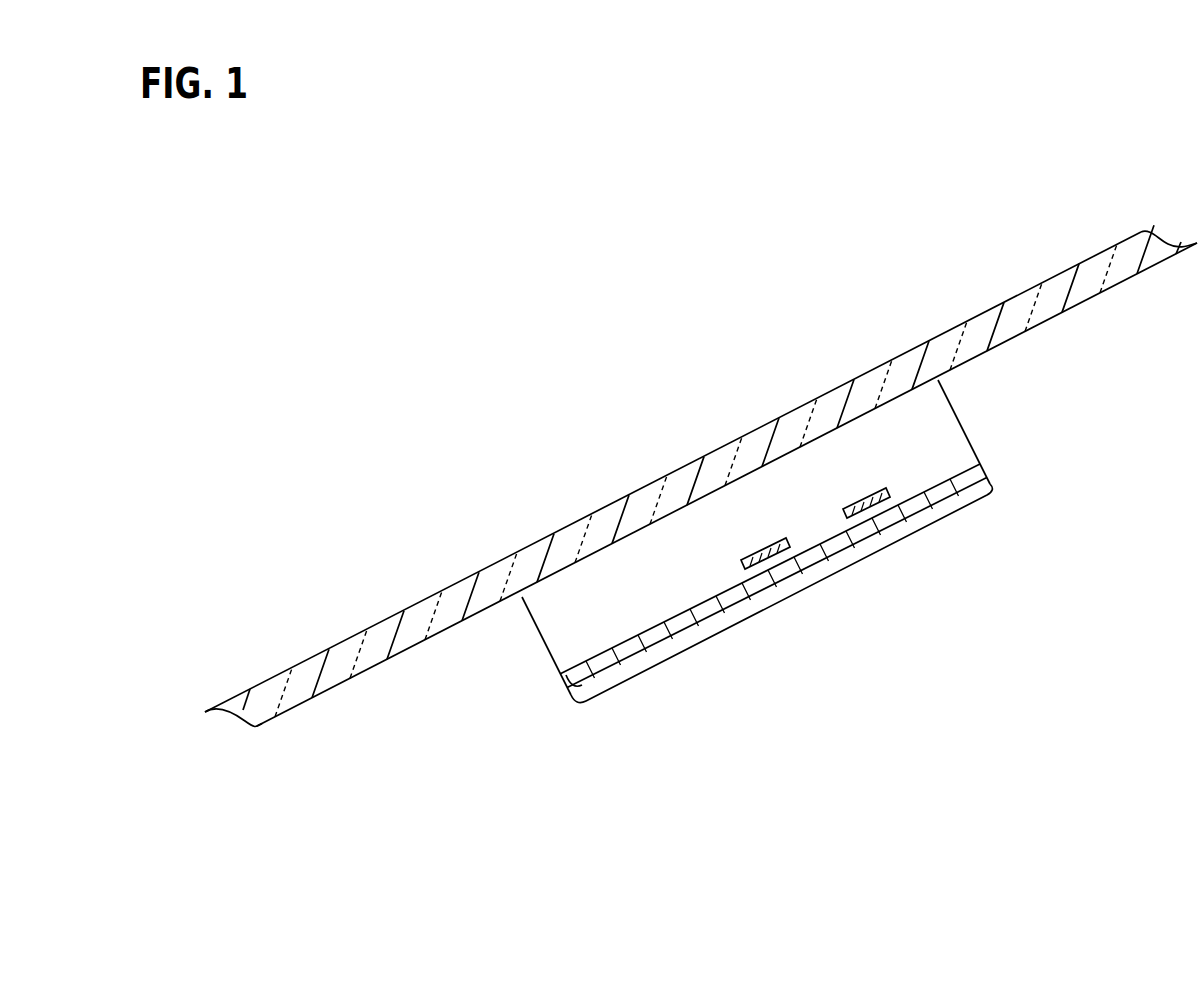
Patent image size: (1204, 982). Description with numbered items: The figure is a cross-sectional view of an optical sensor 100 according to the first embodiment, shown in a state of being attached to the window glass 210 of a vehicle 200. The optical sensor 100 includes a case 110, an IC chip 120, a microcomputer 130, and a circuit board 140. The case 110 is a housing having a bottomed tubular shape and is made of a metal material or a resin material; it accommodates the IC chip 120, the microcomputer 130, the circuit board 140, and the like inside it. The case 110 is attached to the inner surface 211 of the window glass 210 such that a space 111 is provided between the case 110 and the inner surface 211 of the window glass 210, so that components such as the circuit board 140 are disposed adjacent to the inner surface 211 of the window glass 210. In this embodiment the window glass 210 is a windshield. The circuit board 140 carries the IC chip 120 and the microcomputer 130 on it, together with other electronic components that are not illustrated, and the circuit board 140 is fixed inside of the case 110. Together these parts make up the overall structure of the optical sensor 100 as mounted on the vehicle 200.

The optical sensor 100 is at (804, 539).
The case 110 is at (930, 527).
The space 111 is at (780, 496).
The IC chip 120 is at (777, 565).
The microcomputer 130 is at (873, 508).
The circuit board 140 is at (985, 464).
The vehicle 200 is at (701, 460).
The window glass 210 is at (978, 336).
The inner surface 211 is at (1076, 308).